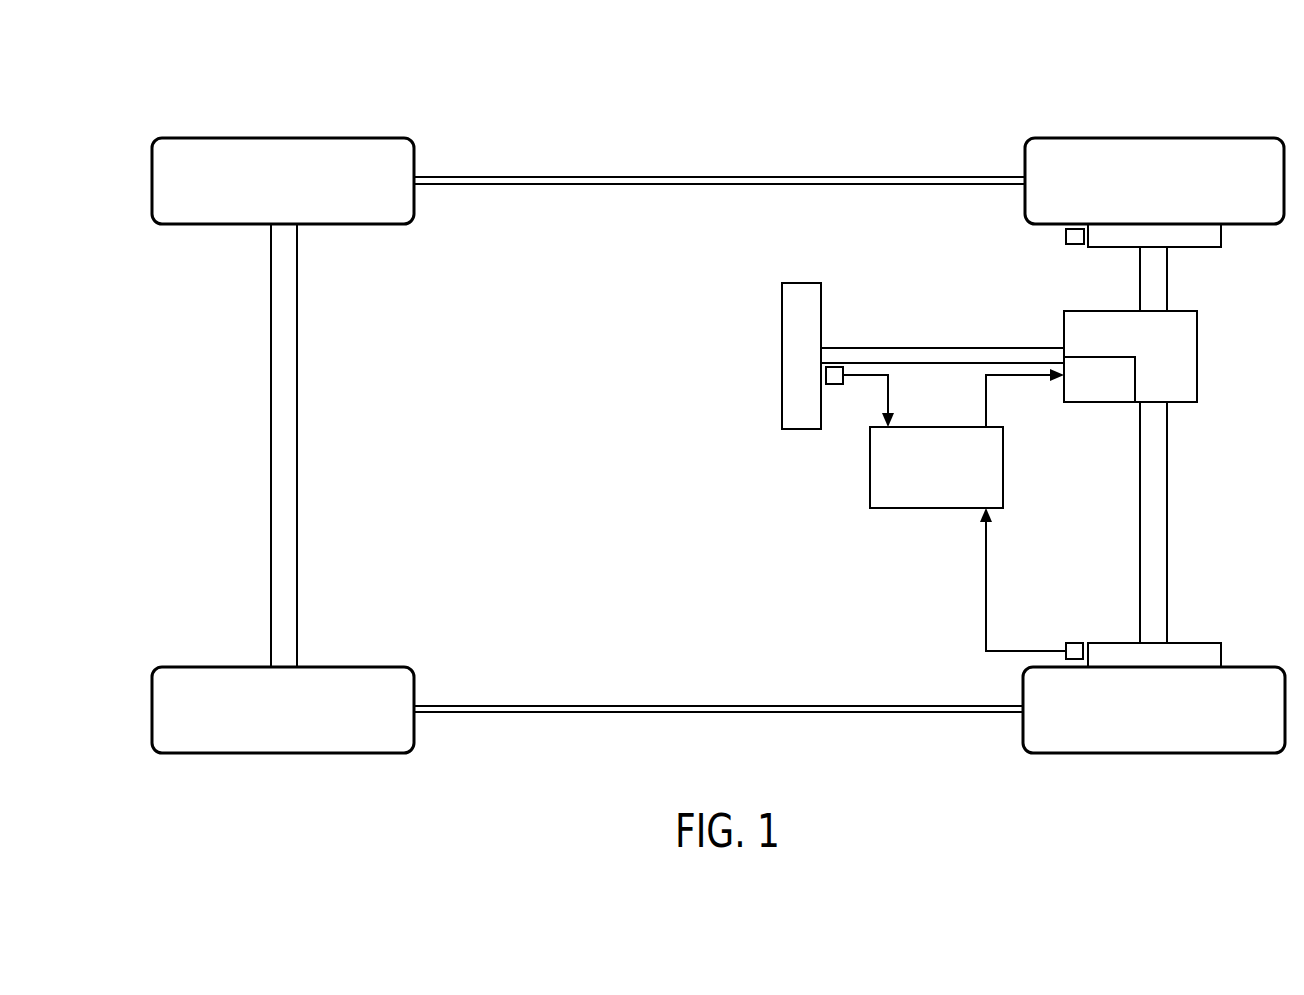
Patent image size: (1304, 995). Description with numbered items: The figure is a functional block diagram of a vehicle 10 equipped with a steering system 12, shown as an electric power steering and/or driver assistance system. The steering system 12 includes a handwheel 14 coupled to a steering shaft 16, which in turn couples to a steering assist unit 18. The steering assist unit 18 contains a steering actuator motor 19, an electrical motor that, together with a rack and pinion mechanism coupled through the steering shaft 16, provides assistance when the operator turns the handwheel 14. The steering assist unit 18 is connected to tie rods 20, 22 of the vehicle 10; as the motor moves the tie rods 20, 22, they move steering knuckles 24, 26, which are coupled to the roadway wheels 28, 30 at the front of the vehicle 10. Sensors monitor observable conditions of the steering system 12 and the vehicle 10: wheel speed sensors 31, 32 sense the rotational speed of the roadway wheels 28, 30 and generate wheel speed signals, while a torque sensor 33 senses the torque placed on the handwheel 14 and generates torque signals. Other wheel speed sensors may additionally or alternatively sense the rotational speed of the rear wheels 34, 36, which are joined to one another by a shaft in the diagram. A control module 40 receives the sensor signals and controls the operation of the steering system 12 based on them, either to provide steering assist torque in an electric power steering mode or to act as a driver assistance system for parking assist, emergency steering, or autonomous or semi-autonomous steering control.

The vehicle 10 is at (1085, 123).
The steering system 12 is at (877, 296).
The handwheel 14 is at (806, 283).
The steering shaft 16 is at (943, 348).
The steering assist unit 18 is at (1199, 360).
The steering actuator motor 19 is at (1137, 388).
The tie rod 20 is at (1170, 294).
The tie rod 22 is at (1169, 535).
The steering knuckle 24 is at (1107, 248).
The steering knuckle 26 is at (1197, 643).
The roadway wheel 28 is at (1025, 156).
The roadway wheel 30 is at (1252, 667).
The wheel speed sensor 31 is at (1066, 237).
The wheel speed sensor 32 is at (1080, 643).
The torque sensor 33 is at (836, 367).
The rear wheel 34 is at (416, 160).
The rear wheel 36 is at (416, 686).
The control module 40 is at (920, 427).